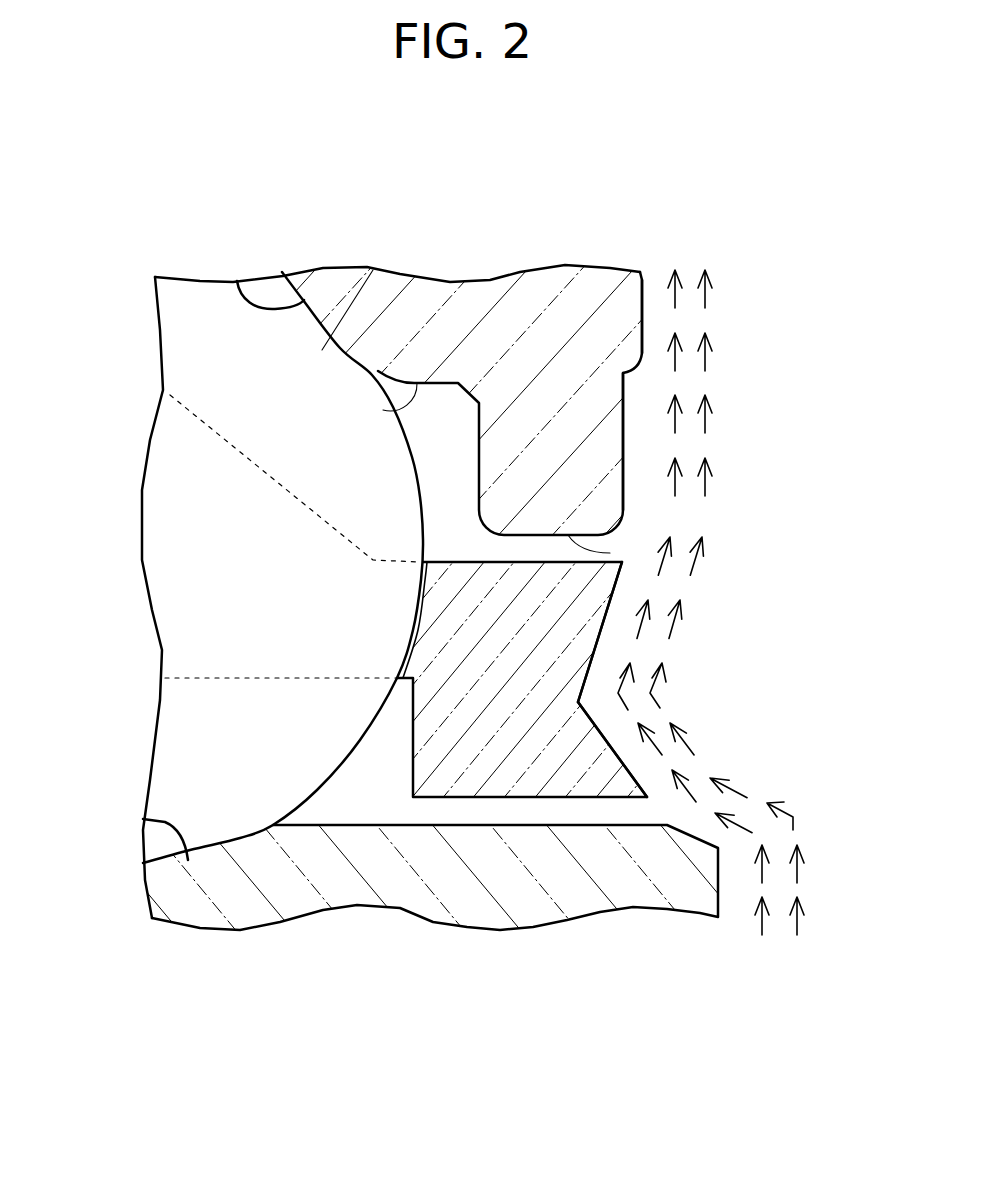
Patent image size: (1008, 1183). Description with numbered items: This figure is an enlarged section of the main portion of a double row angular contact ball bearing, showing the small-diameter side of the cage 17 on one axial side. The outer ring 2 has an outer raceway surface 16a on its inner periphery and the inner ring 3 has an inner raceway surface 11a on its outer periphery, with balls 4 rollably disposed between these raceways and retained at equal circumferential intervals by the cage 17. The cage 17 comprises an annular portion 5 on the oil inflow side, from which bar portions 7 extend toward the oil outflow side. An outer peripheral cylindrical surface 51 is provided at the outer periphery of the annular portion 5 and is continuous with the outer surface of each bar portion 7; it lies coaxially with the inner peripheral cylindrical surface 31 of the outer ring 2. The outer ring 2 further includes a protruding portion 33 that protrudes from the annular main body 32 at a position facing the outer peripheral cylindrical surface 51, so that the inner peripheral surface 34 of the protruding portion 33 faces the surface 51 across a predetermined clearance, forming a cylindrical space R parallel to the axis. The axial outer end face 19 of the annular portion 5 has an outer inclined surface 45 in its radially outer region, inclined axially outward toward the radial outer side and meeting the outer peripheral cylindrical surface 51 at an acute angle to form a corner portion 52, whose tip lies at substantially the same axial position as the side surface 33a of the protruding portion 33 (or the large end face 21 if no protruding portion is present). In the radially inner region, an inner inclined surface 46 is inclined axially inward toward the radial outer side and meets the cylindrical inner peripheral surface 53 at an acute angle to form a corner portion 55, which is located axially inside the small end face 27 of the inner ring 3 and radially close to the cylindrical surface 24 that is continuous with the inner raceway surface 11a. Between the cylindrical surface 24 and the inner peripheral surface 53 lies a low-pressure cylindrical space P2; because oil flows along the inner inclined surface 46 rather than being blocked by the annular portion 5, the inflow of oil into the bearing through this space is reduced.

The outer ring 2 is at (503, 259).
The inner ring 3 is at (719, 898).
The balls 4 is at (343, 327).
The annular portion 5 is at (460, 730).
The bar portions 7 is at (208, 678).
The inner raceway surface 11a is at (143, 819).
The outer raceway surface 16a is at (238, 281).
The cage 17 is at (485, 798).
The axial outer end face 19 is at (770, 632).
The large end face 21 is at (642, 300).
The cylindrical surface 24 is at (458, 825).
The small end face 27 is at (718, 876).
The inner peripheral cylindrical surface 31 is at (383, 408).
The annular main body 32 is at (407, 318).
The protruding portion 33 is at (520, 462).
The side surface of the protruding portion 33a is at (623, 423).
The inner peripheral surface 34 is at (610, 553).
The outer inclined surface 45 is at (595, 647).
The inner inclined surface 46 is at (607, 742).
The outer peripheral cylindrical surface 51 is at (512, 561).
The corner portion 52 is at (623, 563).
The inner peripheral surface 53 is at (567, 798).
The corner portion 55 is at (647, 795).
The cylindrical space R is at (600, 543).
The cylindrical space P2 is at (518, 812).